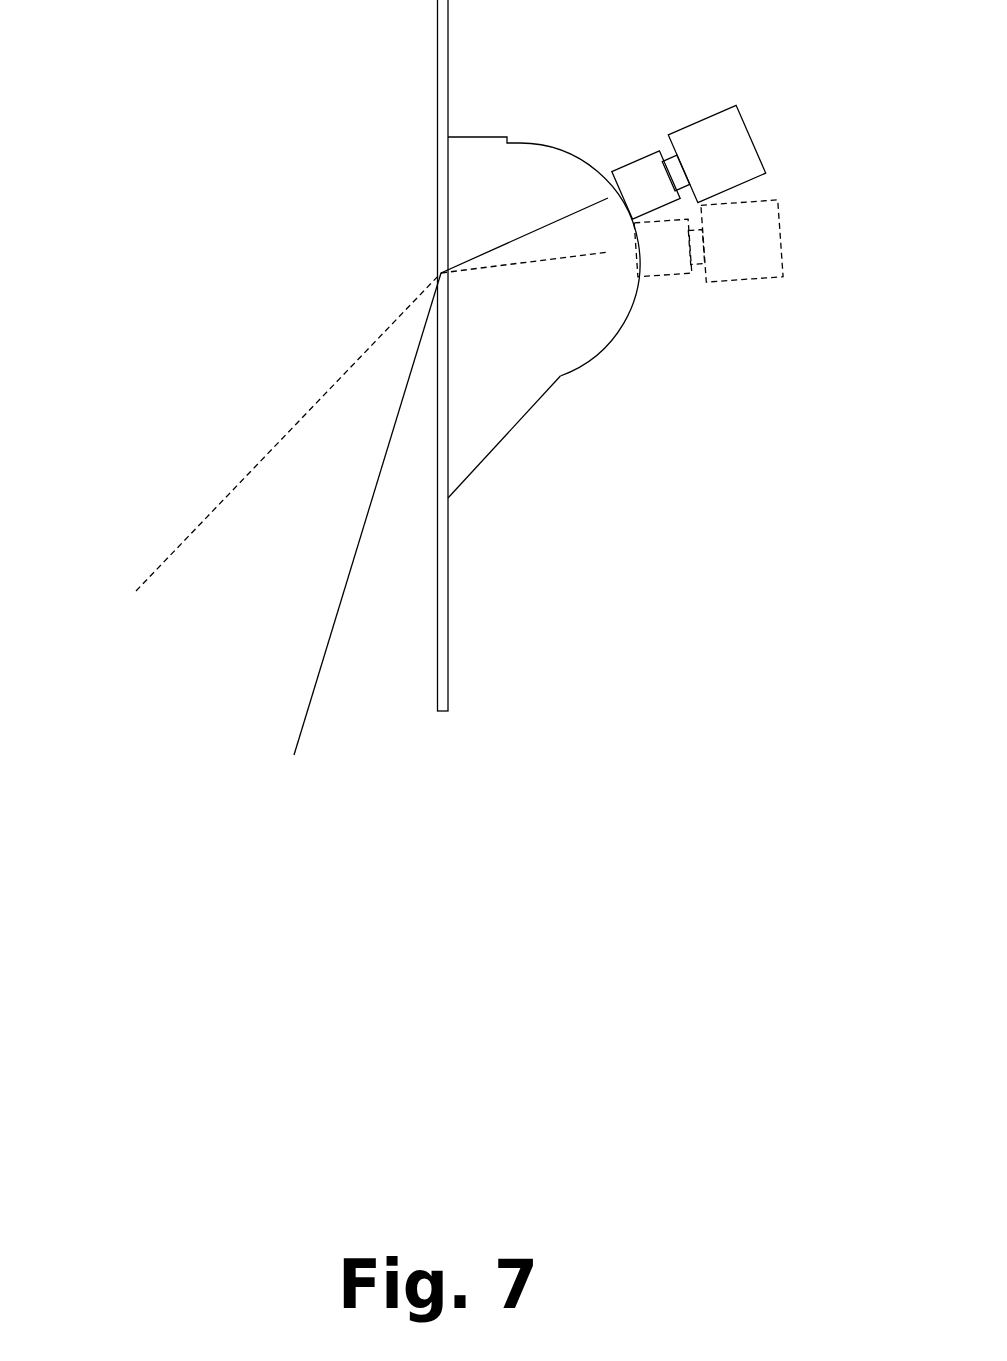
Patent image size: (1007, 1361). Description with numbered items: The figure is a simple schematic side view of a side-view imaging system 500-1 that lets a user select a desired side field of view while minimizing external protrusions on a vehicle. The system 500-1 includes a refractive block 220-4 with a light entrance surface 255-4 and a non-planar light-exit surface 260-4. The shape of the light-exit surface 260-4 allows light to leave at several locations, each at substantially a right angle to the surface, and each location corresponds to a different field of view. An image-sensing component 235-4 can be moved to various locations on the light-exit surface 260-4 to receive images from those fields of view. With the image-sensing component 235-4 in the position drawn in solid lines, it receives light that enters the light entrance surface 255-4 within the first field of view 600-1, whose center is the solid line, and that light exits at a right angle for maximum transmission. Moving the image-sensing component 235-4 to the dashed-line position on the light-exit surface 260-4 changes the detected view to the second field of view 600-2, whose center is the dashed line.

The side-view imaging system 500-1 is at (312, 98).
The light entrance surface 255-4 is at (452, 302).
The non-planar light-exit surface 260-4 is at (597, 178).
The refractive block 220-4 is at (543, 397).
The image-sensing component 235-4 is at (780, 242).
The second field of view 600-2 is at (275, 443).
The first field of view 600-1 is at (313, 688).